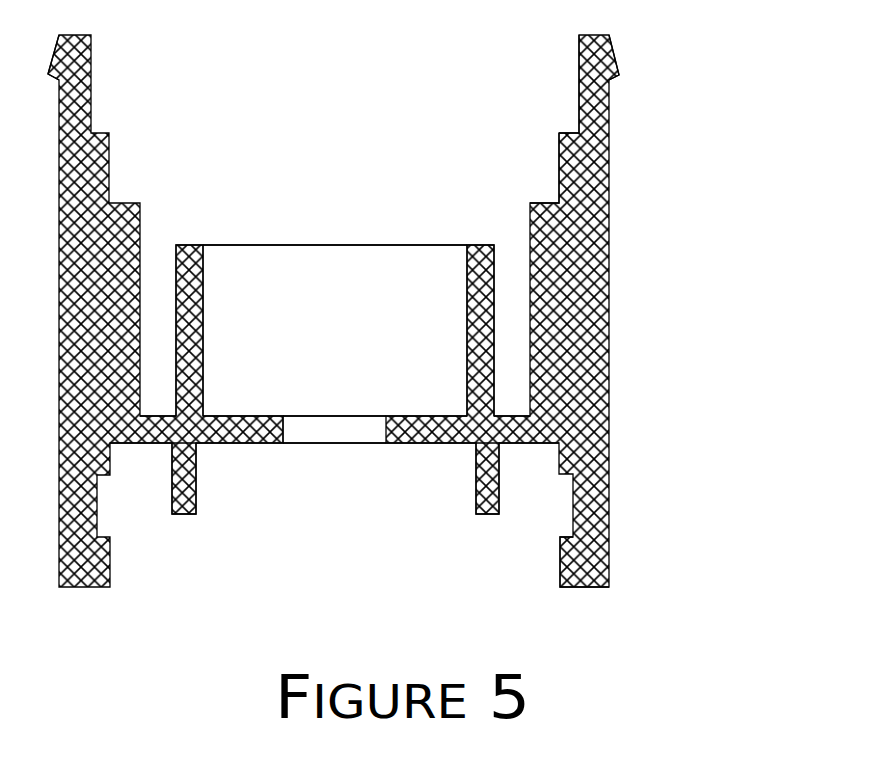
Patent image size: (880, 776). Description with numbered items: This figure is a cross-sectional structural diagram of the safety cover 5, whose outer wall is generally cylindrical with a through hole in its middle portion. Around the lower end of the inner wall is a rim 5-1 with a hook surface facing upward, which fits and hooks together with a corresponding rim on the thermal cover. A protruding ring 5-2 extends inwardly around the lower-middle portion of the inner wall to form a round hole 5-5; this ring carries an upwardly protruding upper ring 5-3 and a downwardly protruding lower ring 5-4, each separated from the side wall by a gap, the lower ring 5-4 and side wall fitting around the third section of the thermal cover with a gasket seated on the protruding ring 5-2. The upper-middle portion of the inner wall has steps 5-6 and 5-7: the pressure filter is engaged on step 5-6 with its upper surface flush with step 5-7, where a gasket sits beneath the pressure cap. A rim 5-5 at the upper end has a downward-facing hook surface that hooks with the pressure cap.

The safety cover 5 is at (609, 249).
The rim 5-1 is at (560, 540).
The protruding ring 5-2 is at (560, 428).
The upper ring 5-3 is at (494, 323).
The lower ring 5-4 is at (499, 503).
The rim (round hole) 5-5 is at (619, 75).
The step 5-6 is at (540, 203).
The step 5-7 is at (563, 133).